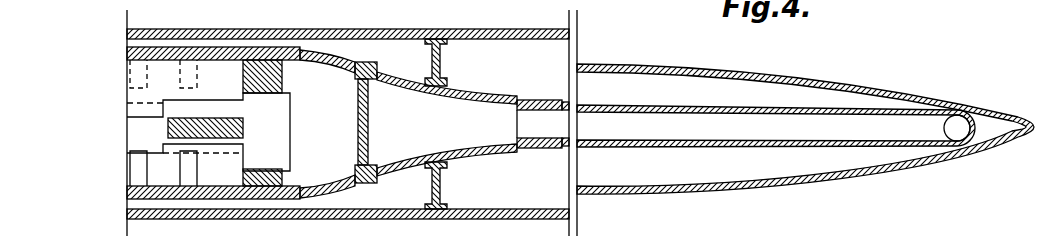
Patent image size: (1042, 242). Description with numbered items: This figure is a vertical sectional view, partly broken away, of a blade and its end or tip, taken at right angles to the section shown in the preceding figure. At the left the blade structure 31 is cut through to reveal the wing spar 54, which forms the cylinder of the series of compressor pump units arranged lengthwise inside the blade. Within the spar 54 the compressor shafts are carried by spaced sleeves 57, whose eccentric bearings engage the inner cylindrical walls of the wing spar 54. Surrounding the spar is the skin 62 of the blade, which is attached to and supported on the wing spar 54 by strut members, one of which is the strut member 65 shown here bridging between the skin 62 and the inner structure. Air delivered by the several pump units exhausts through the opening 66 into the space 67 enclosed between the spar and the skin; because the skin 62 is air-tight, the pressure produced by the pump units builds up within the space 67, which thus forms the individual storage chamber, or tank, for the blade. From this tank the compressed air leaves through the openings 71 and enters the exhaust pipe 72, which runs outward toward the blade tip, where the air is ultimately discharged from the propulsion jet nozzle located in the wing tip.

The valve body assembly 31 is at (175, 93).
The wing spar 54 is at (214, 53).
The spaced sleeves 57 is at (272, 66).
The skin 62 is at (351, 31).
The strut member 65 is at (441, 60).
The opening 66 is at (338, 63).
The space 67 is at (172, 221).
The openings 71 is at (394, 150).
The exhaust pipe 72 is at (746, 124).